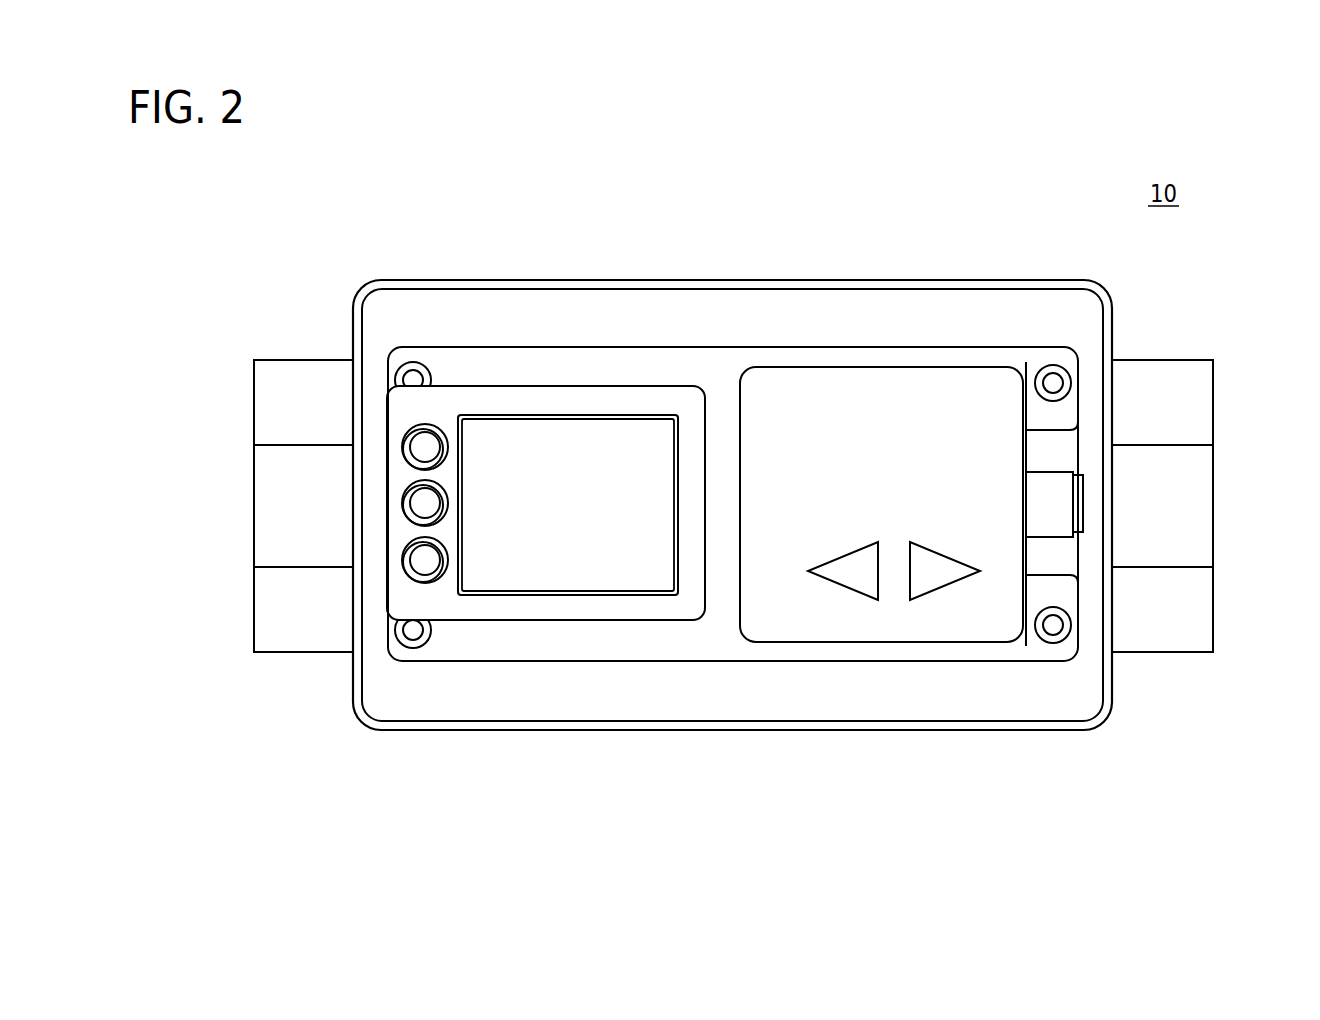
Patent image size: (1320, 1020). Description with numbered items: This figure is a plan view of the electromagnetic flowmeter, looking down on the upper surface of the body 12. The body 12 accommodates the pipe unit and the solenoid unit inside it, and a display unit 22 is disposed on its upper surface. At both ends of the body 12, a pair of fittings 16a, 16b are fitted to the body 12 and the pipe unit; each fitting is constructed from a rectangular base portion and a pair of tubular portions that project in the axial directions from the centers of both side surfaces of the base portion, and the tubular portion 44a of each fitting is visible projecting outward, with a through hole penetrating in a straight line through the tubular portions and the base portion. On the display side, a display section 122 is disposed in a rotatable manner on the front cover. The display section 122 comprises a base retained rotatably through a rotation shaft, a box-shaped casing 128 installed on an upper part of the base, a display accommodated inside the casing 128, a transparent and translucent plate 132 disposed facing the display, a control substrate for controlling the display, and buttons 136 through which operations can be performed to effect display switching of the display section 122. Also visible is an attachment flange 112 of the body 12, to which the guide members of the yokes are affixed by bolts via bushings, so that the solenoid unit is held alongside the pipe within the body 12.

The body 12 is at (487, 735).
The display unit 22 is at (580, 340).
The fitting 16a is at (1218, 428).
The fitting 16b is at (250, 430).
The tubular portion 44a is at (278, 502).
The attachment flange 112 is at (848, 652).
The display section 122 is at (635, 447).
The casing 128 is at (511, 400).
The transparent and translucent plate 132 is at (599, 530).
The buttons 136 is at (428, 445).